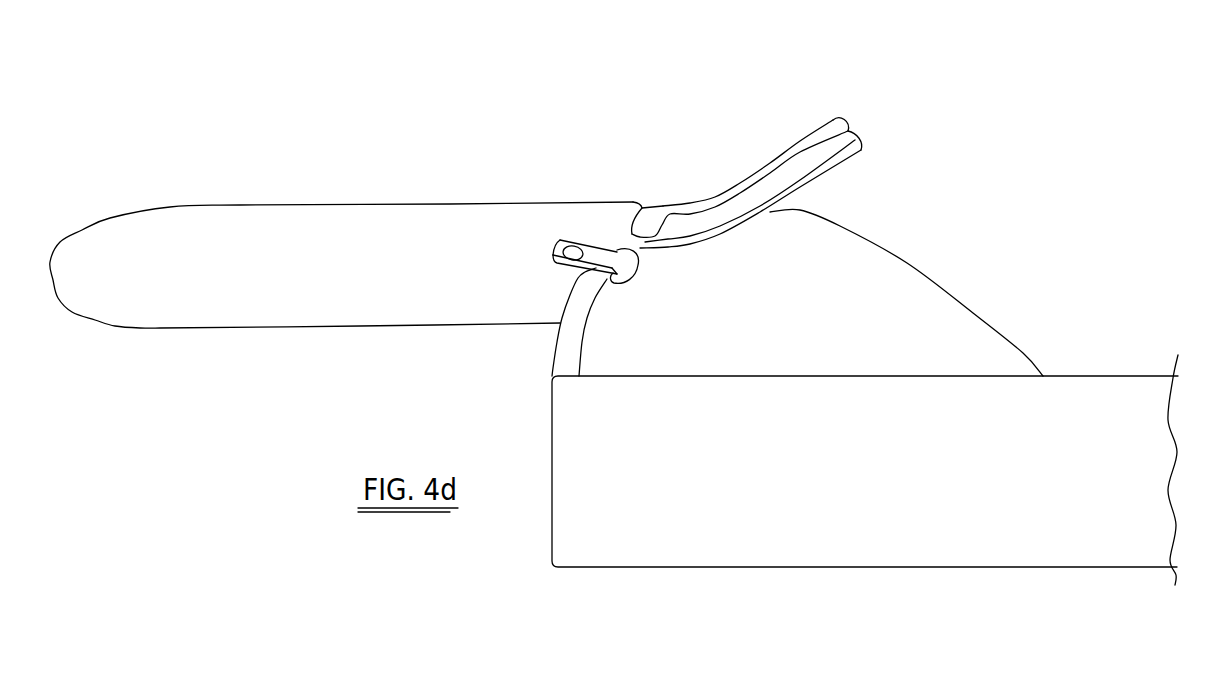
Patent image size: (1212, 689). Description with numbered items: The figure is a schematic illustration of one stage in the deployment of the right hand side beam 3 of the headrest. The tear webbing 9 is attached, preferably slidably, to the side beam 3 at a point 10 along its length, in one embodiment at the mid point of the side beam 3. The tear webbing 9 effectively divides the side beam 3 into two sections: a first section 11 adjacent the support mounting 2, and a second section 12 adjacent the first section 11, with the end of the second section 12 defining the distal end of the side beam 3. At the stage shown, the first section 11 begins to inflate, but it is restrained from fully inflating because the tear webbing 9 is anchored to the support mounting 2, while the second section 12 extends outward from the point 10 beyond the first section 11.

The support mounting 2 is at (968, 533).
The side beam 3 is at (693, 120).
The tear webbing 9 is at (847, 135).
The point 10 is at (598, 257).
The first section 11 is at (932, 305).
The second section 12 is at (247, 212).